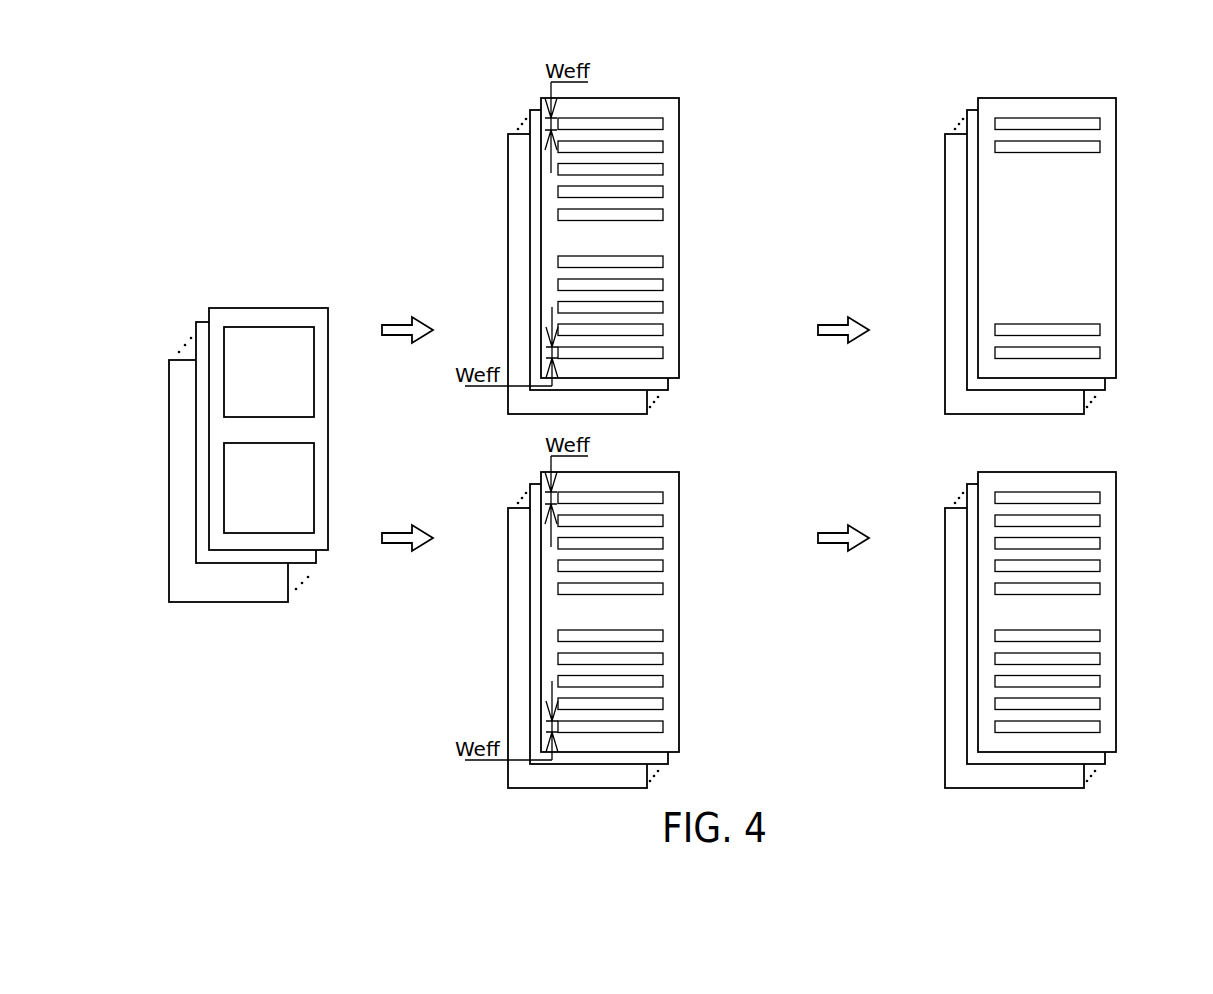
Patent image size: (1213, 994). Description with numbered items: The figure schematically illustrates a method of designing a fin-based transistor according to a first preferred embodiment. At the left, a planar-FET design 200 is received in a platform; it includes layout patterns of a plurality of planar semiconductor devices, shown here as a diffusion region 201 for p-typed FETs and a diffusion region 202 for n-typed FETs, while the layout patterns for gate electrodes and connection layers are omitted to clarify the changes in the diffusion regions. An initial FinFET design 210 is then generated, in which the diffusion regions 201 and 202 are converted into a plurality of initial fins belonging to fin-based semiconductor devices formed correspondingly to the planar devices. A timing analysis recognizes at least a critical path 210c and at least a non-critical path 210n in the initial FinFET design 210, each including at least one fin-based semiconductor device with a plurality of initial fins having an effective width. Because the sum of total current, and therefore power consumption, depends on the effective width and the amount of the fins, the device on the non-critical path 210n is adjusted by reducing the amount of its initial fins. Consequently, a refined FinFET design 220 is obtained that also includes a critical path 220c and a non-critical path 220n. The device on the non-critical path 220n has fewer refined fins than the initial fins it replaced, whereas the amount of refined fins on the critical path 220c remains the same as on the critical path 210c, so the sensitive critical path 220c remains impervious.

The planar-FET design 200 is at (313, 273).
The diffusion regions for p-typed FETs 201 is at (290, 384).
The diffusion regions for n-typed FETs 202 is at (290, 501).
The initial FinFET design 210 is at (484, 97).
The non-critical path 210n is at (673, 97).
The critical path 210c is at (673, 471).
The refined FinFET design 220 is at (921, 97).
The non-critical path 220n is at (1110, 97).
The critical path 220c is at (1110, 471).